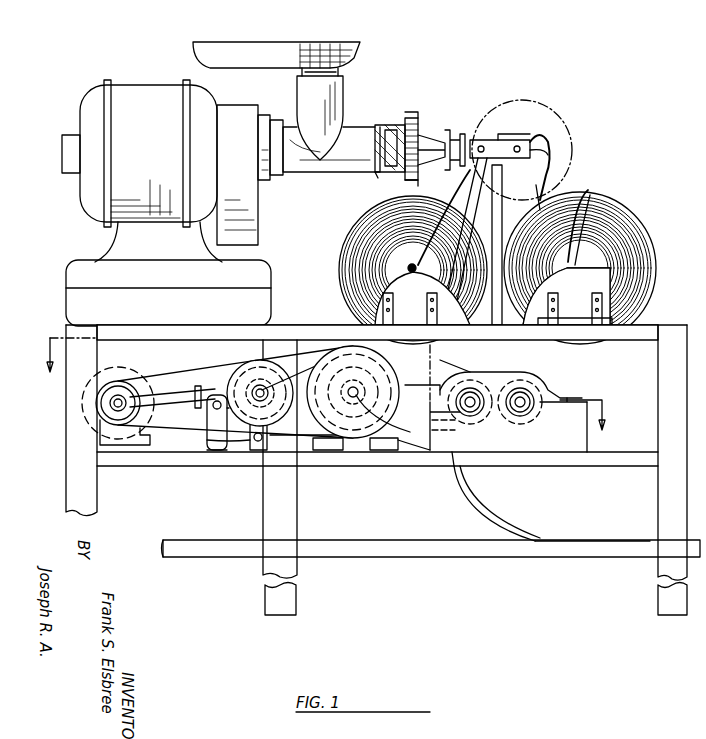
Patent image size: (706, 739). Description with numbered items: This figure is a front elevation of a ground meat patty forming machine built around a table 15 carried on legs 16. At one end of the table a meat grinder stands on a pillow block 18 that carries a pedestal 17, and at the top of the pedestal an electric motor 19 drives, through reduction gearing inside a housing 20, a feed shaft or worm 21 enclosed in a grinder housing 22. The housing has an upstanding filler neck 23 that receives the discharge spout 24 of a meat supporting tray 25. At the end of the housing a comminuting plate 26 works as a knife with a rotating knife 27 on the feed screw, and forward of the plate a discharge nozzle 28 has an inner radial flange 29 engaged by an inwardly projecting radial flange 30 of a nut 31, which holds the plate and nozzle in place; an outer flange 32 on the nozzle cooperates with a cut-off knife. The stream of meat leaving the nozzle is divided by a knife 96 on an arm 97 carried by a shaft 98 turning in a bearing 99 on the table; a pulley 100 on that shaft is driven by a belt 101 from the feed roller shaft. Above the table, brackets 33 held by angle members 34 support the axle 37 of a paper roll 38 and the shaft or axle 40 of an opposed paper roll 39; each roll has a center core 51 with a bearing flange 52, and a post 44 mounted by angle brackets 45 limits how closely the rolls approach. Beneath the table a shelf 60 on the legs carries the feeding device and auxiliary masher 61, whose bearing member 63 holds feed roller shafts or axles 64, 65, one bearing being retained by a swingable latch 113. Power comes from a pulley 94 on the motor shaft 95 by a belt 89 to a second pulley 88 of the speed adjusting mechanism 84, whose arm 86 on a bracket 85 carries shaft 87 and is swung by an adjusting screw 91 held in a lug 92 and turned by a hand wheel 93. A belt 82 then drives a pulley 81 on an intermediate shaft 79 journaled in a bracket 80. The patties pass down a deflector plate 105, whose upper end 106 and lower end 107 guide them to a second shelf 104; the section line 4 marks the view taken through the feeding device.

The section line 4- 4 is at (323, 383).
The table 15 is at (280, 324).
The legs 16 is at (88, 490).
The pedestal 17 is at (108, 230).
The pillow block 18 is at (74, 302).
The electric motor 19 is at (133, 92).
The housing 20 is at (258, 192).
The feed shaft or worm 21 is at (331, 149).
The housing 22 is at (382, 128).
The filler neck 23 is at (344, 90).
The discharge spout 24 is at (340, 68).
The meat supporting tray 25 is at (245, 64).
The comminuting plate 26 is at (414, 118).
The rotating knife 27 is at (393, 130).
The discharge nozzle 28 is at (456, 130).
The radial flange 29 is at (436, 166).
The radial flange 30 is at (418, 136).
The nut 31 is at (400, 174).
The flange 32 is at (490, 120).
The bracket 33 is at (380, 298).
The angle members 34 is at (640, 318).
The axle 37 is at (590, 196).
The paper roll 38 is at (658, 260).
The paper roll 39 is at (345, 247).
The shaft or axle 40 is at (412, 270).
The post 44 is at (472, 330).
The angle brackets 45 is at (505, 326).
The center core 51 is at (350, 282).
The bearing flange 52 is at (506, 216).
The shelf 60 is at (384, 460).
The feeding device and auxiliary masher 61 is at (562, 381).
The bearing member 63 is at (562, 452).
The shaft or axle 64 is at (470, 418).
The shaft or axle 65 is at (520, 418).
The intermediate shaft 79 is at (400, 440).
The bracket 80 is at (372, 440).
The pulley 81 is at (345, 446).
The belt 82 is at (278, 432).
The speed adjusting mechanism 84 is at (222, 368).
The bracket 85 is at (245, 452).
The arm 86 is at (278, 452).
The shaft 87 is at (291, 377).
The second pulley 88 is at (256, 374).
The belt 89 is at (180, 387).
The adjusting screw 91 is at (212, 452).
The lug 92 is at (207, 432).
The hand wheel 93 is at (195, 396).
The pulley 94 is at (128, 425).
The motor shaft 95 is at (130, 384).
The knife 96 is at (482, 140).
The arm 97 is at (510, 134).
The shaft 98 is at (546, 130).
The bearing 99 is at (546, 176).
The pulley 100 is at (548, 142).
The belt 101 is at (440, 362).
The second shelf 104 is at (558, 552).
The deflector plate 105 is at (478, 500).
The upper end 106 is at (470, 470).
The lower end 107 is at (634, 552).
The swingable latch 113 is at (558, 405).